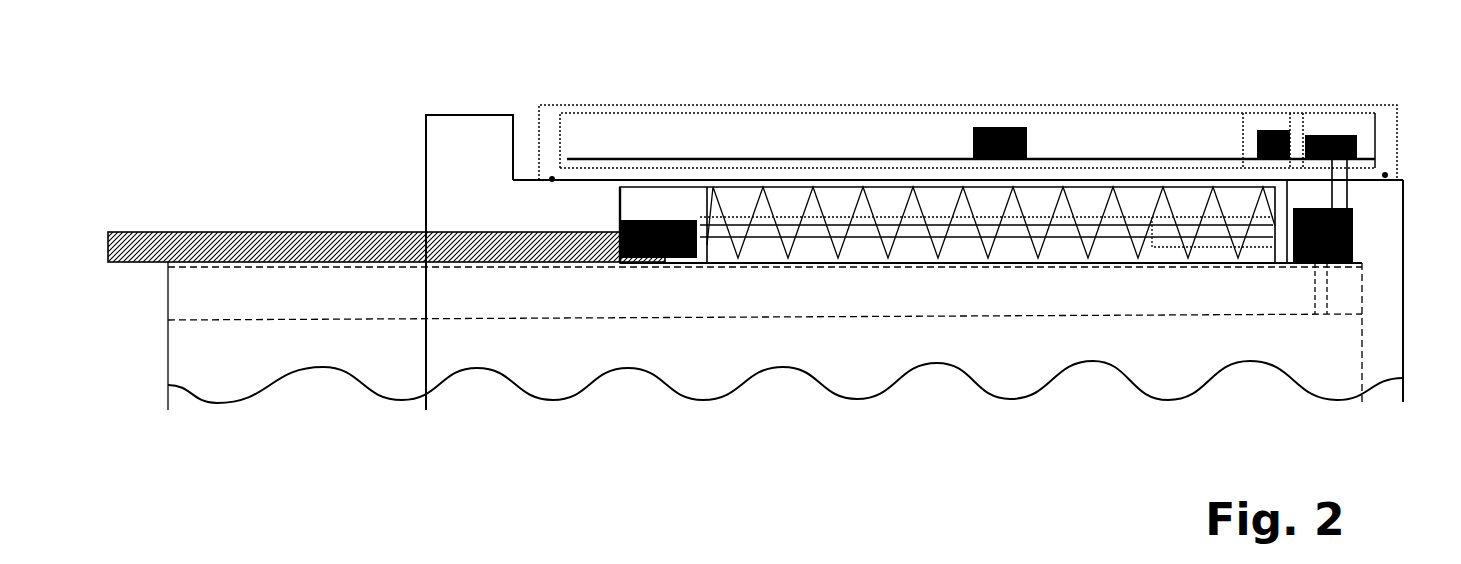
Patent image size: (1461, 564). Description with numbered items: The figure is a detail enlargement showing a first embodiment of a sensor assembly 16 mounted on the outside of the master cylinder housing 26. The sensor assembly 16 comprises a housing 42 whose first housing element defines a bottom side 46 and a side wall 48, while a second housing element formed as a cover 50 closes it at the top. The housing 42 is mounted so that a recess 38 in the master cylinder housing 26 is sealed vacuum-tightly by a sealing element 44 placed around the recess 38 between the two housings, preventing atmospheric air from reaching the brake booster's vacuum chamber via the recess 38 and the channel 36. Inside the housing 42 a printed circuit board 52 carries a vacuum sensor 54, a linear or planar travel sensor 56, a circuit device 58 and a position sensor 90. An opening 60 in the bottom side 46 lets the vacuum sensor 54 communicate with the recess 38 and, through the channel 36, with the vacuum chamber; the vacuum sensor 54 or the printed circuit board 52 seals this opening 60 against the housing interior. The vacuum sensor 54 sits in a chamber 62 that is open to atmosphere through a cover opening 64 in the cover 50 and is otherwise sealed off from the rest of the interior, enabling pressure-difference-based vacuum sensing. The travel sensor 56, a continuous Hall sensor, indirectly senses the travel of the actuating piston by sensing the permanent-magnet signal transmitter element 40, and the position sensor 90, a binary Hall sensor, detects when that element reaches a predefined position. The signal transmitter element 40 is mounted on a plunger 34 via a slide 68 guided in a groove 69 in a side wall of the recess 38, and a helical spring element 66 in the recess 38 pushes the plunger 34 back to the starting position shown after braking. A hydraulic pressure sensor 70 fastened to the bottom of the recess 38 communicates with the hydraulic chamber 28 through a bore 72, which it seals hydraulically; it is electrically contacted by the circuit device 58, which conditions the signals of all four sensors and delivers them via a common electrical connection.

The sensor assembly 16 is at (446, 89).
The master cylinder housing 26 is at (426, 151).
The hydraulic chamber 28 is at (1343, 367).
The plunger 34 is at (248, 247).
The channel 36 is at (498, 267).
The recess 38 is at (940, 207).
The signal transmitter element 40 is at (650, 220).
The housing 42 is at (1037, 84).
The sealing element 44 is at (550, 176).
The bottom side 46 is at (868, 165).
The side wall 48 is at (1385, 150).
The cover 50 is at (748, 117).
The printed circuit board 52 is at (688, 158).
The vacuum sensor 54 is at (1265, 128).
The travel sensor 56 is at (803, 162).
The circuit device 58 is at (1340, 122).
The opening 60 is at (1270, 165).
The chamber 62 is at (1264, 128).
The cover opening 64 is at (1262, 127).
The spring element 66 is at (778, 265).
The slide 68 is at (680, 265).
The groove 69 is at (835, 263).
The hydraulic pressure sensor 70 is at (1358, 222).
The bore 72 is at (1328, 290).
The position sensor 90 is at (992, 127).